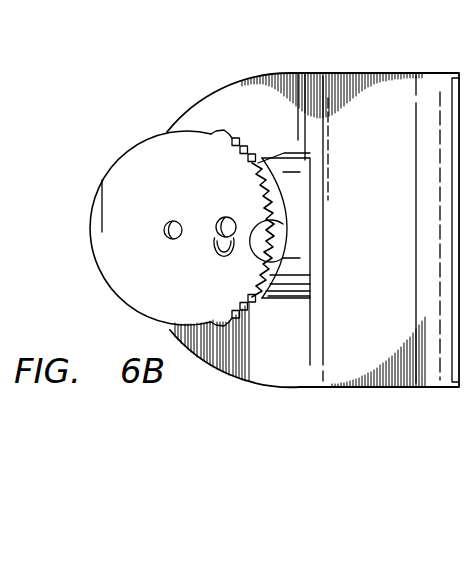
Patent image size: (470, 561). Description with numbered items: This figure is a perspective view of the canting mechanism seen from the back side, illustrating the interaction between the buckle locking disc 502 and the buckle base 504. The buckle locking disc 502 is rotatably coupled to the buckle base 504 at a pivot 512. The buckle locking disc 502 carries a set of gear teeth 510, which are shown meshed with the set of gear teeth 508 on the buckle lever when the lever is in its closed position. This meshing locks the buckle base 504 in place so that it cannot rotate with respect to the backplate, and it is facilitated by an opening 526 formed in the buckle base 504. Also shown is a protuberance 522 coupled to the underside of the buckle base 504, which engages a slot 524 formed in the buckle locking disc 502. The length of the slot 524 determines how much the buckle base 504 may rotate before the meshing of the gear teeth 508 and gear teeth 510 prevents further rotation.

The buckle locking disc 502 is at (103, 177).
The buckle base 504 is at (382, 98).
The set of gear teeth 508 is at (285, 231).
The set of gear teeth 510 is at (250, 309).
The pivot 512 is at (166, 223).
The protuberance 522 is at (219, 222).
The slot 524 is at (206, 252).
The opening 526 is at (295, 183).